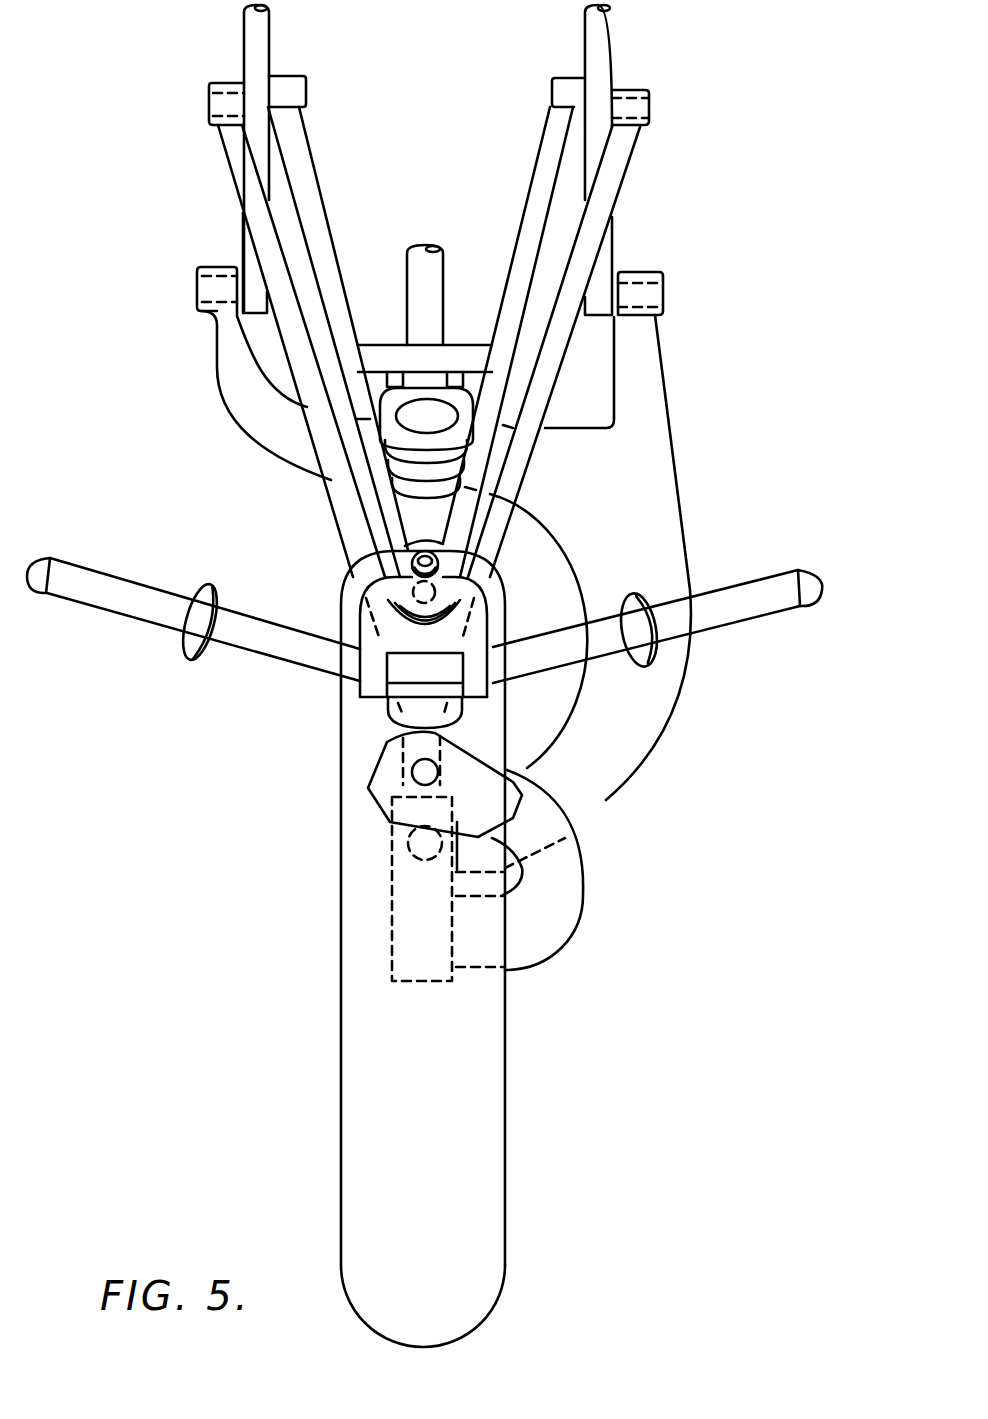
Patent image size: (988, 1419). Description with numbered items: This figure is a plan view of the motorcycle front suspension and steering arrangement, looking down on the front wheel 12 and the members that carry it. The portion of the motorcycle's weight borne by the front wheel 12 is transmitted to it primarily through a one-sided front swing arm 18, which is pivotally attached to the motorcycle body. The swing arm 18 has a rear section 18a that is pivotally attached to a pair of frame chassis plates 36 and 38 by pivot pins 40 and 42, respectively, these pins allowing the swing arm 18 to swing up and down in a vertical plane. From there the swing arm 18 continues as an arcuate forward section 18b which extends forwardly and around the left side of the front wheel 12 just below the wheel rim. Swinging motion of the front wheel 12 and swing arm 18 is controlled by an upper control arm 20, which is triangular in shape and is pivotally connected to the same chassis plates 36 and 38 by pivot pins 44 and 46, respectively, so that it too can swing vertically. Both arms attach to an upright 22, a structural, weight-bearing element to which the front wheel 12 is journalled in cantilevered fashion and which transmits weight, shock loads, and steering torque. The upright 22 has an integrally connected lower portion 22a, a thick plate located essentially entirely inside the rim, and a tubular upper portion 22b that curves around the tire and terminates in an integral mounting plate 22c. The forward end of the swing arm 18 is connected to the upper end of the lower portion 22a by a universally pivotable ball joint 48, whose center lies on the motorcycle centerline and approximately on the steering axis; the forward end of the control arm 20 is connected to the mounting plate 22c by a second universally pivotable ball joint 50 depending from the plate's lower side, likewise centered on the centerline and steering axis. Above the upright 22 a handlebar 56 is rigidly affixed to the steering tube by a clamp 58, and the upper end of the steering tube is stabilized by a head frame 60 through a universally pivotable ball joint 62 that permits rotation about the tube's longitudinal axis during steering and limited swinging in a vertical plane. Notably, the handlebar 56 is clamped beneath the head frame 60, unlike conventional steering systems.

The front wheel 12 is at (330, 1018).
The one-sided front swing arm 18 is at (674, 412).
The rear section of swing arm 18a is at (250, 419).
The arcuate forward section 18b is at (652, 697).
The upper control arm 20 is at (522, 450).
The upright 22 is at (473, 855).
The lower portion of upright 22a is at (393, 922).
The upper portion of upright 22b is at (568, 853).
The mounting plate 22c is at (480, 772).
The frame chassis plate 36 is at (604, 247).
The frame chassis plate 38 is at (243, 230).
The pivot pin 40 is at (657, 295).
The pivot pin 42 is at (198, 287).
The pivot pin 44 is at (628, 112).
The pivot pin 46 is at (209, 102).
The ball joint 48 is at (407, 836).
The ball joint 50 is at (411, 770).
The handlebar 56 is at (285, 658).
The clamp 58 is at (362, 611).
The head frame 60 is at (410, 560).
The ball joint 62 is at (412, 590).